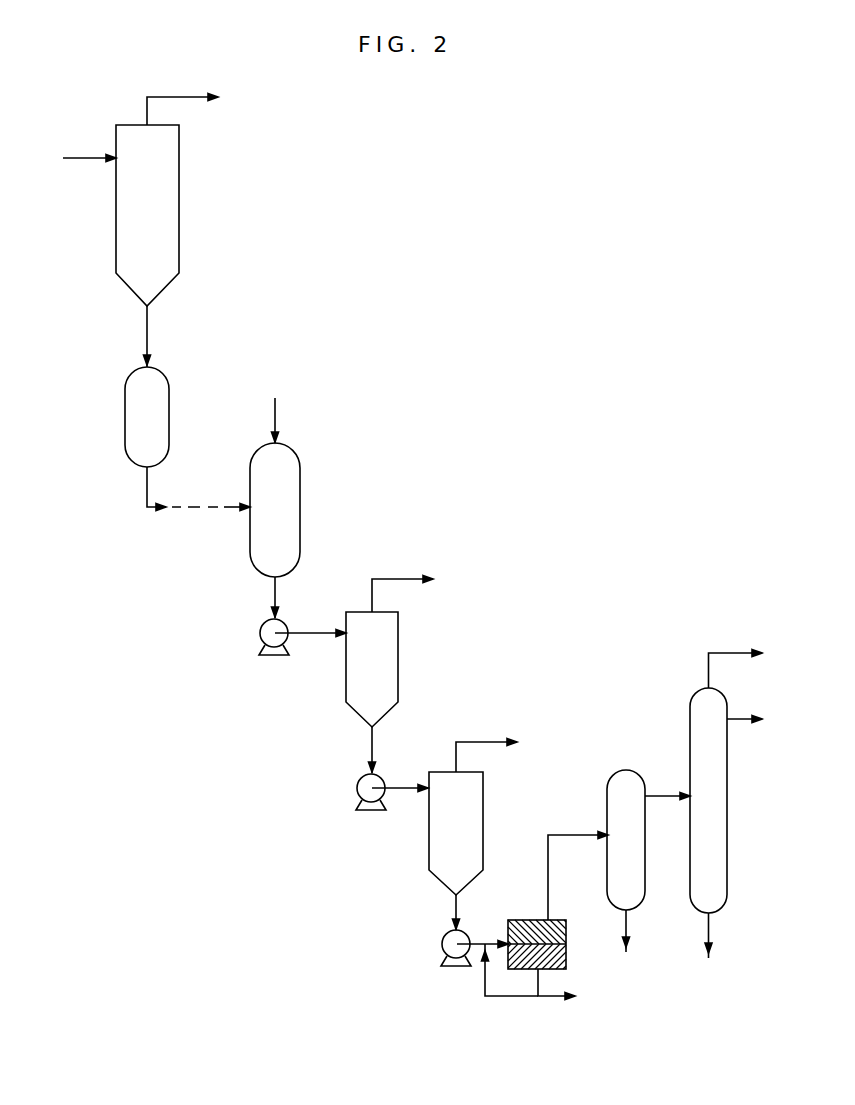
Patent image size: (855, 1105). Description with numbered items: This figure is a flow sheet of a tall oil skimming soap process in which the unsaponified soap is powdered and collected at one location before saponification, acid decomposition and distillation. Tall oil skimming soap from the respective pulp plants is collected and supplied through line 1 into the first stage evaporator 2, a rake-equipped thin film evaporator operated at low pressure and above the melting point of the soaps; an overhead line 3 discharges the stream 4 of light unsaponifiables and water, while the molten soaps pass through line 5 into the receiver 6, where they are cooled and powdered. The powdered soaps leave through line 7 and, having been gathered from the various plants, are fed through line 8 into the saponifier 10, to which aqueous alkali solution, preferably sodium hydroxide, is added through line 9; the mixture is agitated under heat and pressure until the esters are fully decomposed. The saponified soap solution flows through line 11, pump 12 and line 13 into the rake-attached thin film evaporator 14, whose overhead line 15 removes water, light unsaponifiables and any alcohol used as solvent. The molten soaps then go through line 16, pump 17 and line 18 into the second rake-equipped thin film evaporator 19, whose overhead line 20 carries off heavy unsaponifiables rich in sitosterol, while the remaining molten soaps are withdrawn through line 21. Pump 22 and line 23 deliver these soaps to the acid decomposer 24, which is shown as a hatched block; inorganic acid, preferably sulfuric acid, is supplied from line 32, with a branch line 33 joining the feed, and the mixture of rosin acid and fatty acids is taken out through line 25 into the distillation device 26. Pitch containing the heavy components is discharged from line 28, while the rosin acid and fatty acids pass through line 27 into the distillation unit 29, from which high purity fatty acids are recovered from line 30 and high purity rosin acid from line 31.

The line 1 is at (78, 158).
The first stage evaporator 2 is at (180, 165).
The overhead outlet line 3 is at (168, 97).
The overhead product stream 4 is at (225, 97).
The line 5 is at (149, 316).
The receiver 6 is at (169, 400).
The transfer line 7 is at (149, 497).
The line 8 is at (224, 507).
The line 9 is at (276, 412).
The saponifier 10 is at (300, 485).
The line 11 is at (277, 592).
The pump 12 is at (260, 637).
The line 13 is at (300, 636).
The thin film evaporator 14 is at (398, 633).
The overhead outlet line 15 is at (388, 579).
The line 16 is at (374, 740).
The pump 17 is at (357, 784).
The line 18 is at (405, 790).
The thin film evaporator 19 is at (483, 797).
The overhead outlet line 20 is at (470, 742).
The line 21 is at (458, 903).
The pump 22 is at (442, 950).
The line 23 is at (478, 941).
The acid decomposer 24 is at (566, 924).
The line 25 is at (584, 834).
The distillation device 26 is at (645, 840).
The overhead line 27 is at (670, 796).
The line 28 is at (626, 950).
The distillation unit 29 is at (727, 806).
The line 30 is at (733, 716).
The line 31 is at (708, 951).
The line 32 is at (572, 991).
The recycle line 33 is at (530, 998).